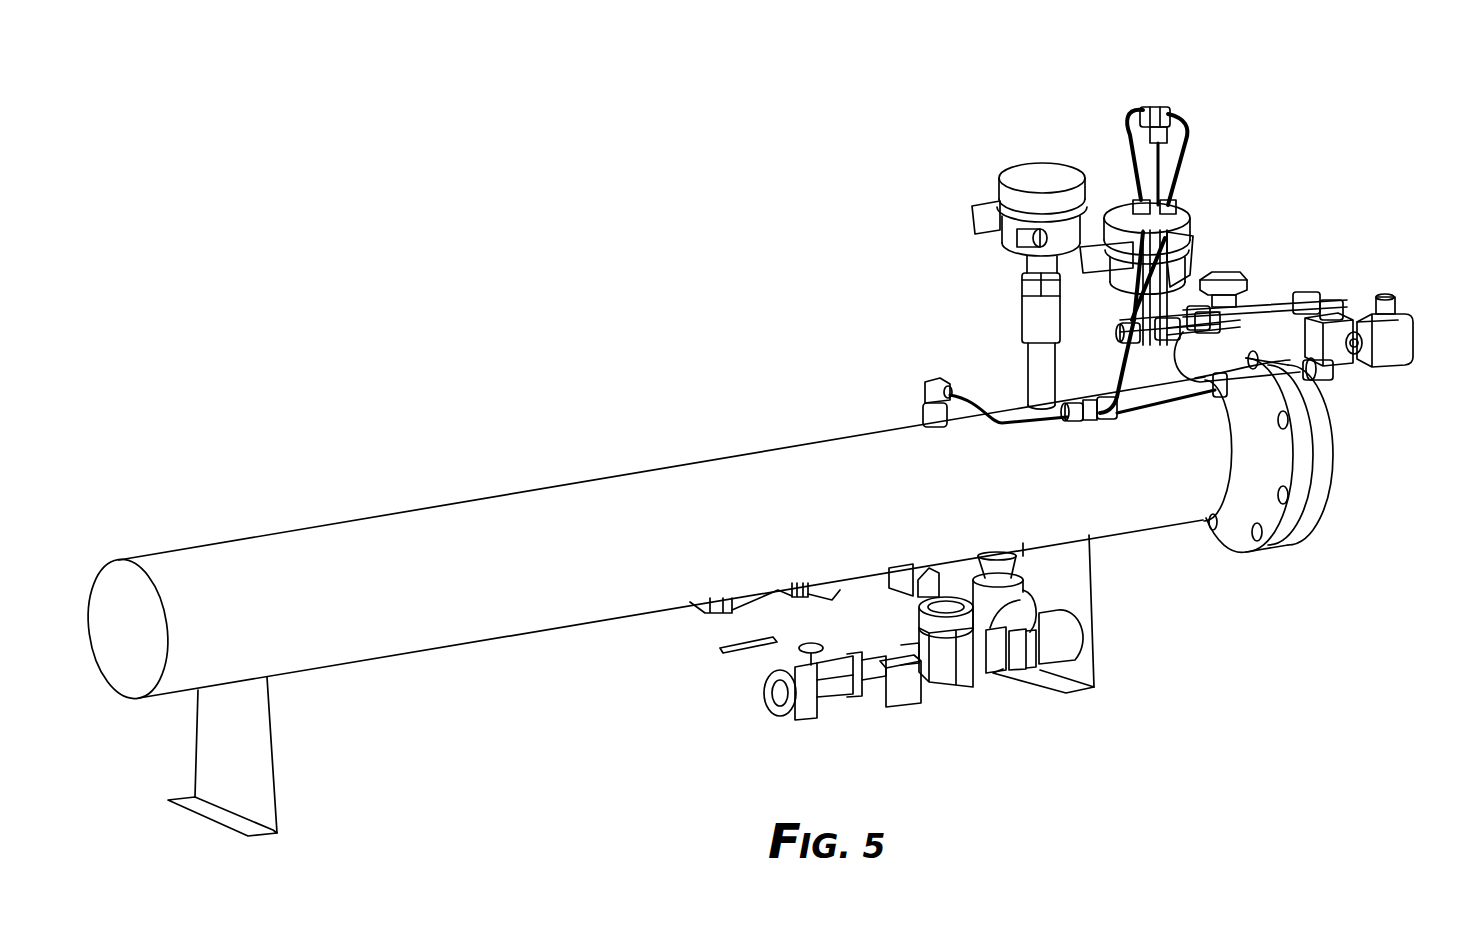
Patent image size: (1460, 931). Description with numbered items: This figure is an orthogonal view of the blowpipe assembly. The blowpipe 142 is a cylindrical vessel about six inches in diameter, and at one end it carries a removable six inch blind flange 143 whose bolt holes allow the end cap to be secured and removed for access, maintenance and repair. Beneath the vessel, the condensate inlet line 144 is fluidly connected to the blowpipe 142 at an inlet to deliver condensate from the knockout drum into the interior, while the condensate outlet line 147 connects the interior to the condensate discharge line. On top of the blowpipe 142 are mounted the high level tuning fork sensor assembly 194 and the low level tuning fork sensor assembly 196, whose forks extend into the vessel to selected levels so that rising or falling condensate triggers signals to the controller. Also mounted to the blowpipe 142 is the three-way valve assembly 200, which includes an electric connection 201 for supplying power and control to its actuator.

The blowpipe 142 is at (637, 471).
The blind flange 143 is at (1332, 500).
The condensate inlet line 144 is at (1001, 673).
The condensate outlet line 147 is at (860, 580).
The high level tuning fork sensor assembly 194 is at (1010, 163).
The low level tuning fork sensor assembly 196 is at (1113, 203).
The three-way valve assembly 200 is at (1200, 125).
The electric connection 201 is at (1387, 296).